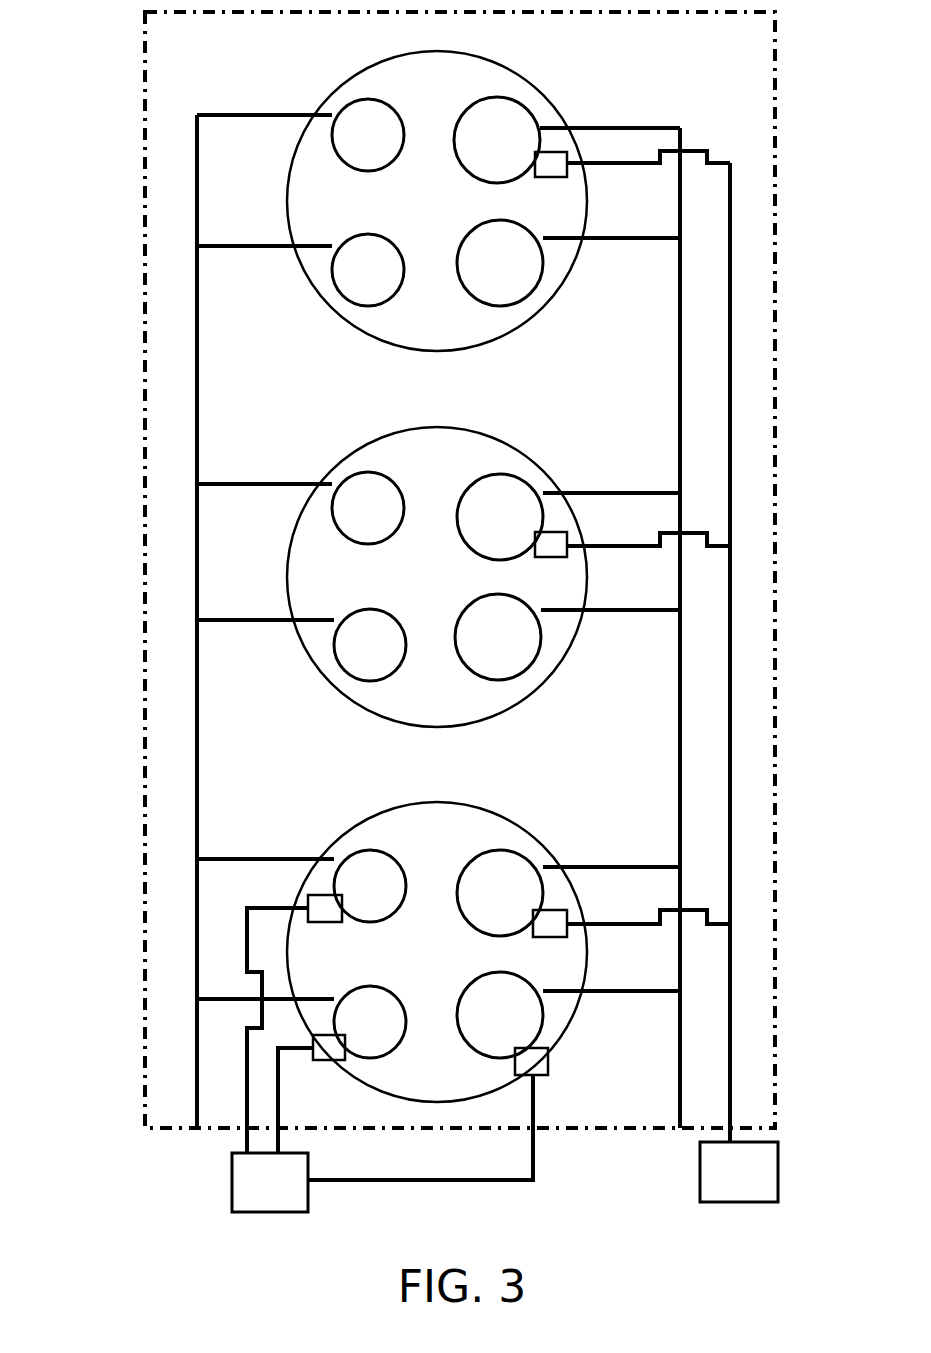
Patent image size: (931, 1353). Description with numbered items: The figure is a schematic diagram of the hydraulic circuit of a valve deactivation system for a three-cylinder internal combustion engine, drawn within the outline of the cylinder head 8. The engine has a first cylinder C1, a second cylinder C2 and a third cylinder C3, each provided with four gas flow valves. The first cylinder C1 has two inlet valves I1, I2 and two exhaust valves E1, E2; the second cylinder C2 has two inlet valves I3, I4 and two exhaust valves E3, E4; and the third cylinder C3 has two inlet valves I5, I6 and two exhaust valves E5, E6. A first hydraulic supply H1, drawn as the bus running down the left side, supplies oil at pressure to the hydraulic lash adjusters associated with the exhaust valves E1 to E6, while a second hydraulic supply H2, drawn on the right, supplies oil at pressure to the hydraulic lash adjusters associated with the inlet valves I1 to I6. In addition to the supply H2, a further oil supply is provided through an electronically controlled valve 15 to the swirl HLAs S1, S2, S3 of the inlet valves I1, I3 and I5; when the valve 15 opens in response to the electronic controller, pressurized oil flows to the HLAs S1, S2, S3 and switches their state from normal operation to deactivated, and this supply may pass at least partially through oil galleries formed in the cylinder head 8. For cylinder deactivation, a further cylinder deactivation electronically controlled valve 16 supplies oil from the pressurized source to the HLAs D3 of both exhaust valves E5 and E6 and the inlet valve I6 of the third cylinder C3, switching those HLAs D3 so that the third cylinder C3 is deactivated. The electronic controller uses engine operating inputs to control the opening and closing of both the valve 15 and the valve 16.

The cylinder head 8 is at (138, 139).
The electronically controlled valve 15 is at (739, 1172).
The cylinder deactivation electronically controlled valve 16 is at (270, 1182).
The first hydraulic supply H1 is at (197, 1030).
The second hydraulic supply H2 is at (680, 1037).
The first cylinder C1 is at (437, 201).
The second cylinder C2 is at (437, 577).
The third cylinder C3 is at (437, 952).
The exhaust valve E1 is at (352, 100).
The exhaust valve E2 is at (340, 297).
The exhaust valve E3 is at (353, 474).
The exhaust valve E4 is at (354, 677).
The exhaust valve E5 is at (357, 850).
The exhaust valve E6 is at (301, 1022).
The inlet valve I1 is at (515, 100).
The inlet valve I2 is at (527, 295).
The inlet valve I3 is at (517, 477).
The inlet valve I4 is at (525, 670).
The inlet valve I5 is at (517, 855).
The inlet valve I6 is at (568, 1015).
The swirl HLA S1 is at (632, 164).
The swirl HLA S2 is at (632, 544).
The swirl HLA S3 is at (631, 923).
The HLA D3 is at (397, 1037).